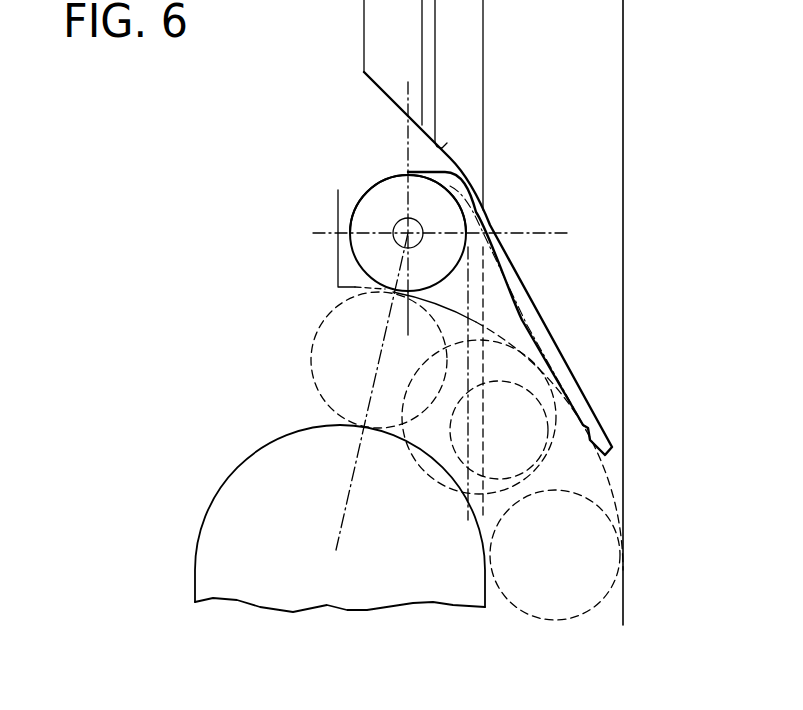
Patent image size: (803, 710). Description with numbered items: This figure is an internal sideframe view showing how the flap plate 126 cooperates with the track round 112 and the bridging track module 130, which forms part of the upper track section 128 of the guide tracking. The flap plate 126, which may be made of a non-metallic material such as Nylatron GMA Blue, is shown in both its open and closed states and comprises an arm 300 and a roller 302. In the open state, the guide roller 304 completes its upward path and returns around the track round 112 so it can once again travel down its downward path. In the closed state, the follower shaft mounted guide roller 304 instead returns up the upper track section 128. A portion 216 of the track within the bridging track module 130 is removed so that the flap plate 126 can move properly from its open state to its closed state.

The track round 112 is at (417, 561).
The flap plate 126 is at (382, 172).
The upper track section 128 is at (663, 200).
The bridging track module 130 is at (363, 24).
The portion of the track 216 is at (441, 148).
The arm 300 is at (518, 274).
The roller 302 is at (383, 178).
The guide roller 304 is at (317, 330).